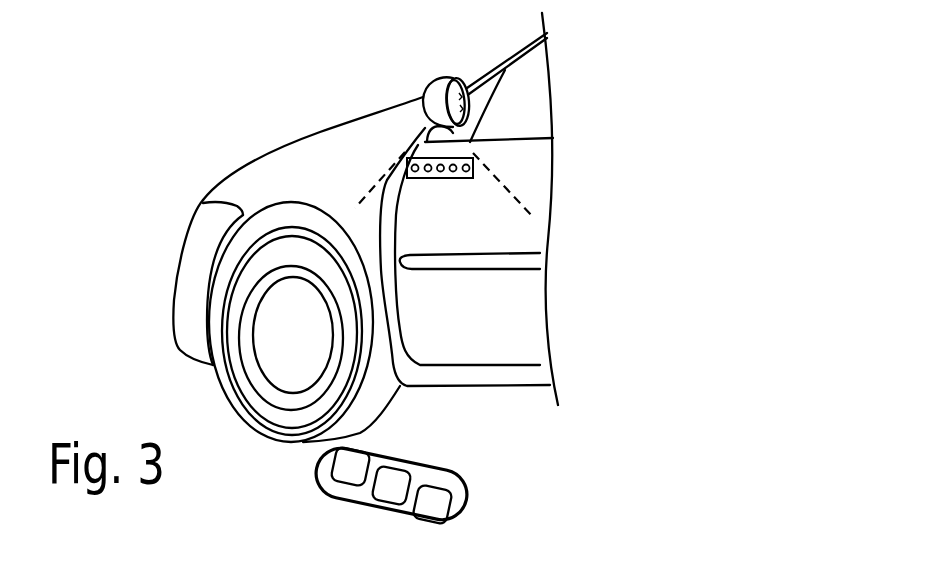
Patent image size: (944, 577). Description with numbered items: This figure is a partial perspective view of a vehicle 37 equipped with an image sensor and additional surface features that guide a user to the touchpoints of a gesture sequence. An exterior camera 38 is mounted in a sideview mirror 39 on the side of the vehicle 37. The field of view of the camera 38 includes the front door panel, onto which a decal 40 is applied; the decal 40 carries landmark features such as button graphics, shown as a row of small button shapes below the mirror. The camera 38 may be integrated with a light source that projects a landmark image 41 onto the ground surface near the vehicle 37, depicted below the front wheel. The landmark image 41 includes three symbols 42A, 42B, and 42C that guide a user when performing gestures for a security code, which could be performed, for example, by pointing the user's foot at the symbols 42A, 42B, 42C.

The vehicle 37 is at (299, 137).
The exterior camera 38 is at (420, 102).
The sideview mirror 39 is at (443, 78).
The decal 40 is at (446, 179).
The landmark image 41 is at (398, 508).
The symbol 42A is at (327, 498).
The symbol 42B is at (385, 505).
The symbol 42C is at (437, 513).